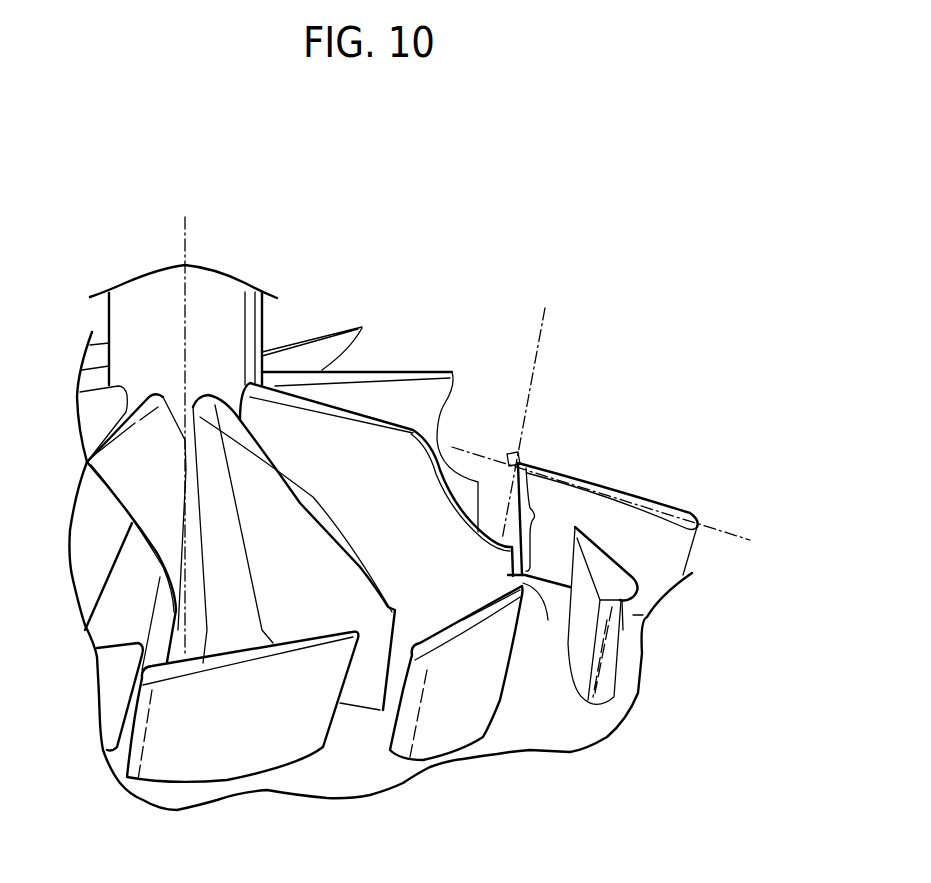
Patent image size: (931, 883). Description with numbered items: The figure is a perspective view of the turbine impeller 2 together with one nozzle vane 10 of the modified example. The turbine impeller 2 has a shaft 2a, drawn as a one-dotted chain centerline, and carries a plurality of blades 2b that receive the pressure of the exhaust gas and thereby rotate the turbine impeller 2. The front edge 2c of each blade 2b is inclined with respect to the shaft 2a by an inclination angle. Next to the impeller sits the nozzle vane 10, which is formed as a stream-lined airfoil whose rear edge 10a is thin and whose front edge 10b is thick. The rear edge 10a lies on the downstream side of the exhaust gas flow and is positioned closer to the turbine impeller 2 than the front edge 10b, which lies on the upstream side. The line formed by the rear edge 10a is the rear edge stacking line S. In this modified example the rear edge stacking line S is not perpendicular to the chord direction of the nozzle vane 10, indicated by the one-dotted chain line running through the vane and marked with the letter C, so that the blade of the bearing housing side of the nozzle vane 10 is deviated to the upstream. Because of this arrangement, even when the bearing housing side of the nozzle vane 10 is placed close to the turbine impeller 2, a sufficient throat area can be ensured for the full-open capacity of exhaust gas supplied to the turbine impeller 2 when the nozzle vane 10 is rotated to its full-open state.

The turbine impeller 2 is at (394, 324).
The shaft 2a is at (235, 333).
The blade 2b is at (387, 427).
The front edge 2c is at (510, 575).
The nozzle vane 10 is at (603, 557).
The rear edge 10a is at (575, 527).
The front edge 10b is at (623, 630).
The rear edge stacking line S is at (540, 519).
The axis C is at (614, 504).